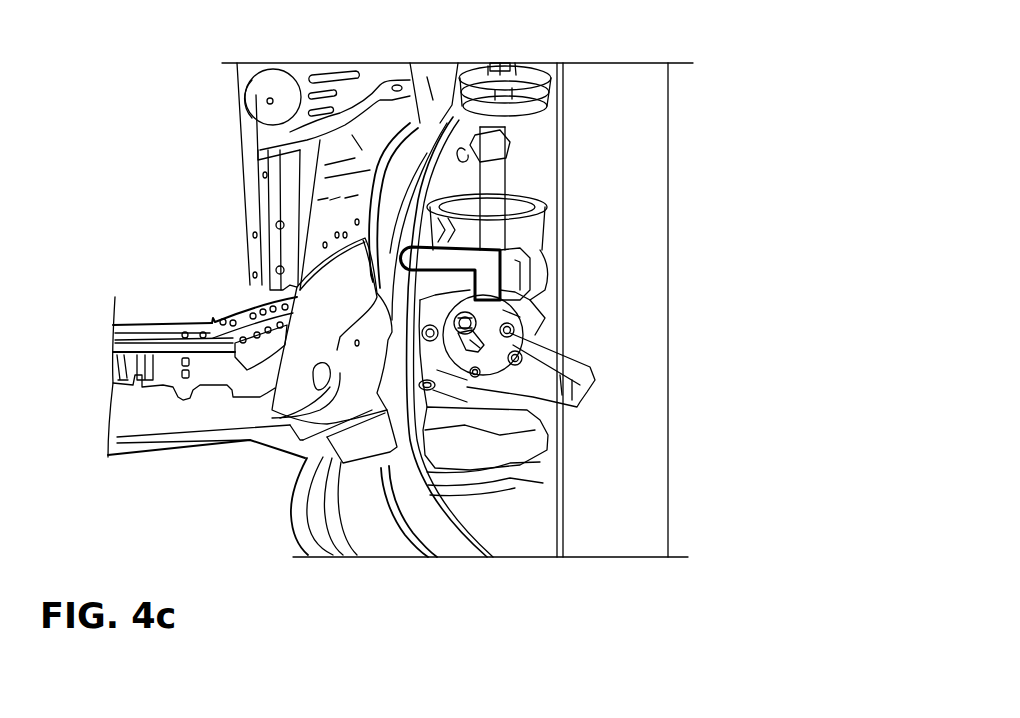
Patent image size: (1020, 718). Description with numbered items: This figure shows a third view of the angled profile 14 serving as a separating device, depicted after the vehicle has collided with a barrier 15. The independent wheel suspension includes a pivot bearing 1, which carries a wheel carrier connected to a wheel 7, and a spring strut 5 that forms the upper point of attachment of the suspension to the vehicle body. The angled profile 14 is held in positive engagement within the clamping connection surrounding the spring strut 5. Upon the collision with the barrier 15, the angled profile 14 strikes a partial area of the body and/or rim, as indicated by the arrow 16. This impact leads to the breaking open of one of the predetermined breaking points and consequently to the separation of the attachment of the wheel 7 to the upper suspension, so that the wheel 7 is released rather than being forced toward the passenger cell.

The pivot bearing 1 is at (443, 382).
The spring strut 5 is at (495, 182).
The wheel 7 is at (338, 510).
The angled profile 14 is at (500, 250).
The barrier 15 is at (643, 418).
The arrow 16 is at (402, 252).